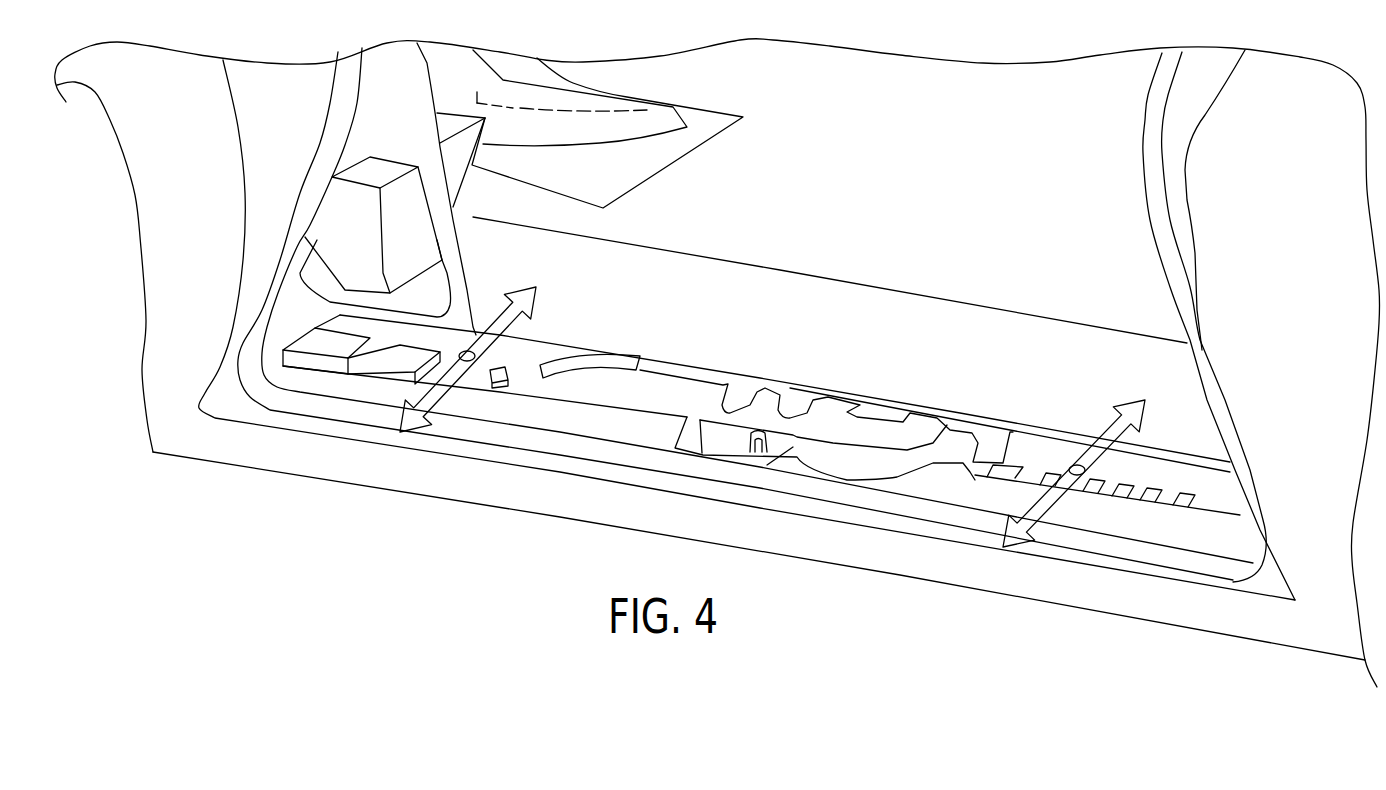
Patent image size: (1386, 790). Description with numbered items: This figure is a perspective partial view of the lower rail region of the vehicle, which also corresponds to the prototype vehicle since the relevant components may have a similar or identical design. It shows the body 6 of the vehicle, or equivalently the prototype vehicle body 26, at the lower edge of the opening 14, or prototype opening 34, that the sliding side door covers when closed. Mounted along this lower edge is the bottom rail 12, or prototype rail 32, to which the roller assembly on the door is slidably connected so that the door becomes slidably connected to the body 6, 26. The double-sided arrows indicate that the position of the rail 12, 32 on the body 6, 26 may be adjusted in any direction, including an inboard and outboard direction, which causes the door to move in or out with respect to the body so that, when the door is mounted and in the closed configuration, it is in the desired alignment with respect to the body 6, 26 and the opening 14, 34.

The body 6 is at (759, 440).
The prototype vehicle body 26 is at (895, 560).
The rail 12 is at (761, 415).
The prototype rail 32 is at (695, 385).
The opening 14 is at (772, 435).
The prototype opening 34 is at (620, 317).